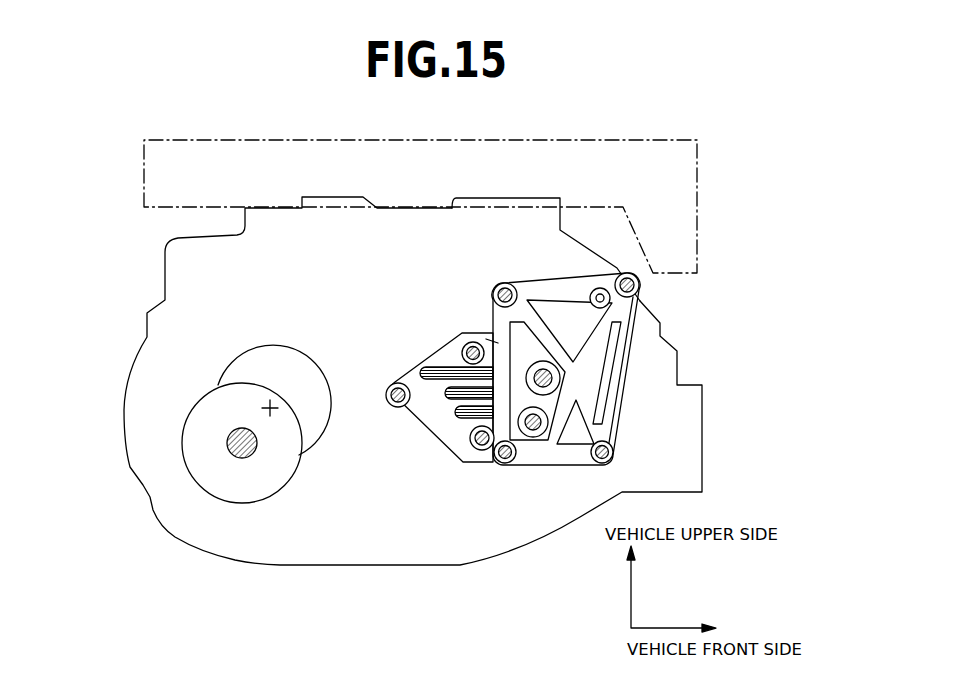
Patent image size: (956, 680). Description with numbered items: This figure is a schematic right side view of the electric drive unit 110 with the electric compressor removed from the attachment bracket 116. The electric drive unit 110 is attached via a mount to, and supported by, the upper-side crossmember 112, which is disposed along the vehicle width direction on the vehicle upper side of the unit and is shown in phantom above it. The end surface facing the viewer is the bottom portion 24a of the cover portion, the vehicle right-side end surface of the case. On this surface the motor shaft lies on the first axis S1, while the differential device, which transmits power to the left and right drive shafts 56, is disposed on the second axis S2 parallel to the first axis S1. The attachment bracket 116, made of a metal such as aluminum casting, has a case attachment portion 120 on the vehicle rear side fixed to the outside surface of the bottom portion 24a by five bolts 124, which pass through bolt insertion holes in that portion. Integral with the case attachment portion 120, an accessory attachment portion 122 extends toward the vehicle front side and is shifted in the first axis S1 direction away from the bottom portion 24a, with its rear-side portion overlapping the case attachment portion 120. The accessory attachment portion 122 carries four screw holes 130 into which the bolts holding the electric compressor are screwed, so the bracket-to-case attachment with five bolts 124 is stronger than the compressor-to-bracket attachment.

The electric drive unit 110 is at (140, 268).
The upper-side crossmember 112 is at (338, 148).
The attachment bracket 116 is at (555, 282).
The case attachment portion 120 is at (435, 418).
The accessory attachment portion 122 is at (600, 350).
The bolts 124 is at (466, 344).
The screw holes 130 is at (507, 283).
The bottom portion 24a is at (312, 527).
The drive shafts 56 is at (228, 437).
The first axis S1 is at (505, 343).
The second axis S2 is at (286, 405).